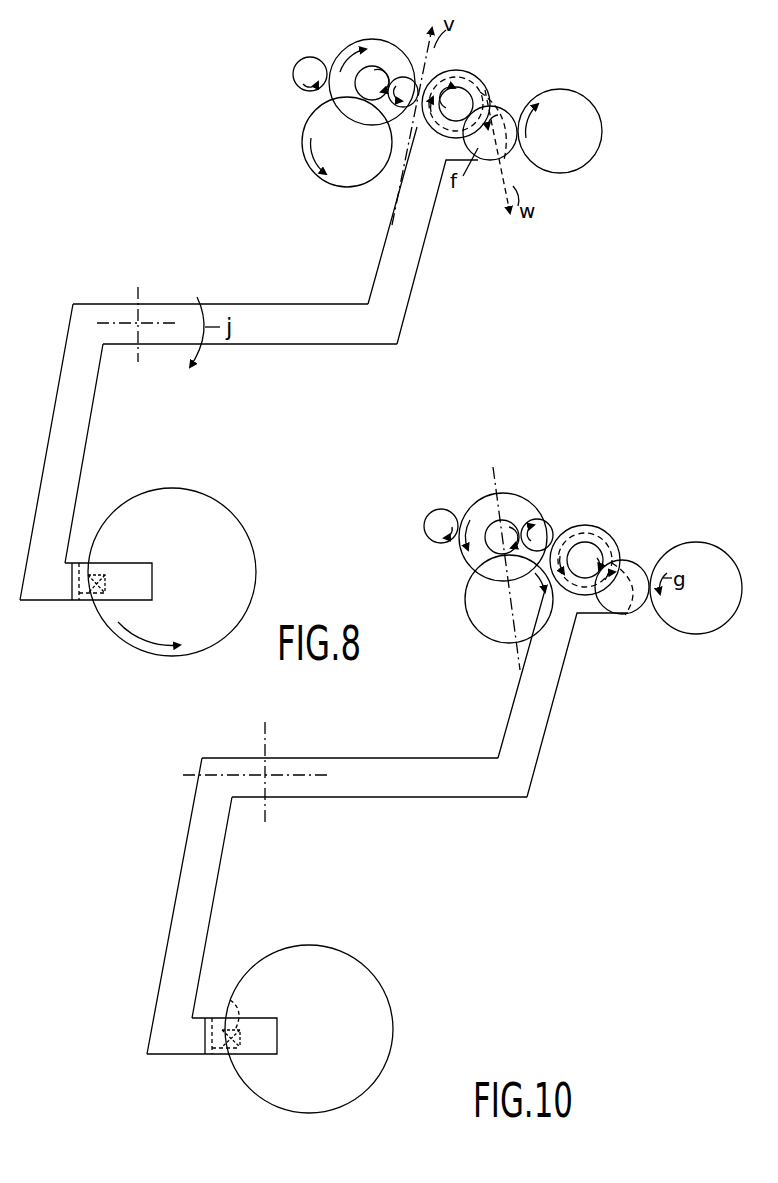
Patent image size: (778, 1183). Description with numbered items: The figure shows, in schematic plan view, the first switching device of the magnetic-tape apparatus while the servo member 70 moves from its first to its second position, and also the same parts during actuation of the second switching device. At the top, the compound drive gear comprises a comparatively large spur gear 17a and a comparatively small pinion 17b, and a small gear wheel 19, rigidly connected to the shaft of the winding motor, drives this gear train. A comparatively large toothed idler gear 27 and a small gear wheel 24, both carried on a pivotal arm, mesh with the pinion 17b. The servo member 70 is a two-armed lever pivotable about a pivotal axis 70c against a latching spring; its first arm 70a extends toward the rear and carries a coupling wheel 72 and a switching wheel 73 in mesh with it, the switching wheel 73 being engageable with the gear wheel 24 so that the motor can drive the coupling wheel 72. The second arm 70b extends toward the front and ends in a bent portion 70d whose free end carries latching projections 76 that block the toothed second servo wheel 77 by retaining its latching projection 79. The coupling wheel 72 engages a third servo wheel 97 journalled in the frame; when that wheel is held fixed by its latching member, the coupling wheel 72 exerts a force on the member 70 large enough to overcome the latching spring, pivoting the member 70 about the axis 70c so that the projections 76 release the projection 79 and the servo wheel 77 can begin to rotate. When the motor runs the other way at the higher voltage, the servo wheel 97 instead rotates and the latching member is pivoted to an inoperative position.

In FIG. 8, the spur gear 17a is at (345, 45).
In FIG. 10, the spur gear 17a is at (472, 505).
In FIG. 8, the pinion 17b is at (373, 67).
In FIG. 10, the pinion 17b is at (507, 521).
In FIG. 8, the gear wheel 19 is at (298, 62).
In FIG. 10, the gear wheel 19 is at (428, 515).
In FIG. 8, the gear wheel 24 is at (414, 114).
In FIG. 10, the gear wheel 24 is at (547, 523).
In FIG. 8, the idler gear 27 is at (330, 184).
In FIG. 10, the idler gear 27 is at (484, 637).
In FIG. 8, the servo member 70 is at (404, 292).
In FIG. 10, the servo member 70 is at (420, 801).
In FIG. 8, the first arm 70a is at (430, 222).
In FIG. 10, the first arm 70a is at (528, 732).
In FIG. 8, the second arm 70b is at (80, 437).
In FIG. 10, the second arm 70b is at (202, 906).
In FIG. 8, the pivotal axis 70c is at (137, 325).
In FIG. 10, the pivotal axis 70c is at (267, 777).
In FIG. 8, the bent portion 70d is at (125, 583).
In FIG. 10, the bent portion 70d is at (262, 1040).
In FIG. 8, the coupling wheel 72 is at (502, 108).
In FIG. 10, the coupling wheel 72 is at (630, 613).
In FIG. 8, the switching wheel 73 is at (446, 70).
In FIG. 10, the switching wheel 73 is at (607, 534).
In FIG. 8, the latching projections 76 is at (86, 603).
In FIG. 10, the latching projections 76 is at (217, 1058).
In FIG. 8, the second servo wheel 77 is at (218, 502).
In FIG. 10, the second servo wheel 77 is at (367, 1012).
In FIG. 8, the latching projection 79 is at (97, 577).
In FIG. 10, the latching projection 79 is at (230, 1000).
In FIG. 8, the third servo wheel 97 is at (601, 117).
In FIG. 10, the third servo wheel 97 is at (681, 632).